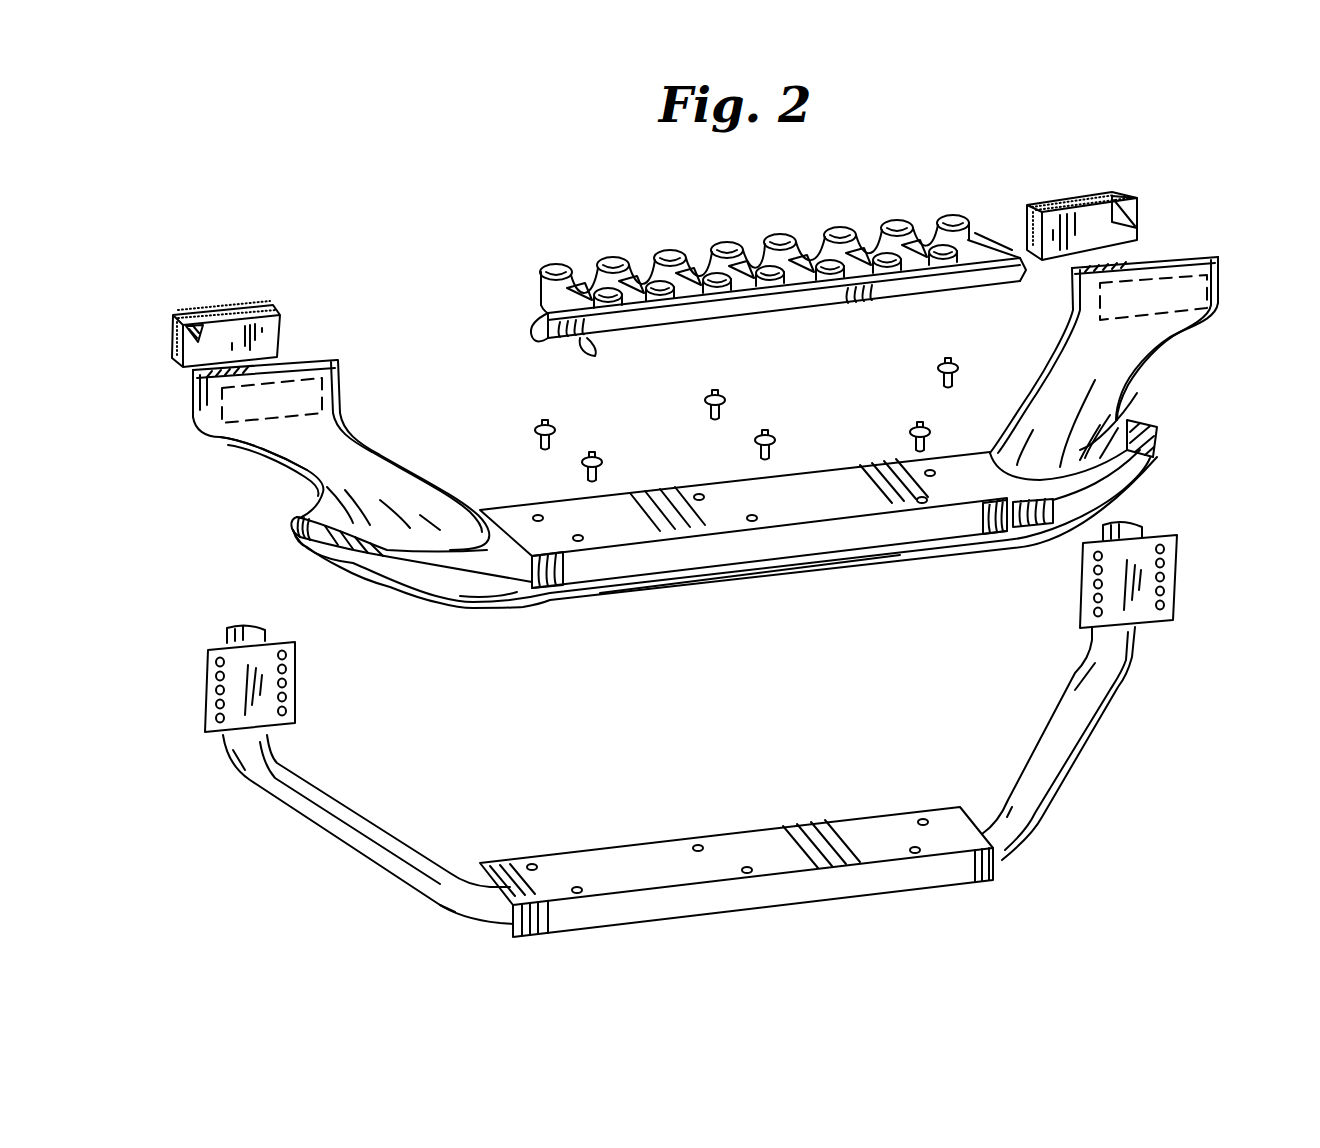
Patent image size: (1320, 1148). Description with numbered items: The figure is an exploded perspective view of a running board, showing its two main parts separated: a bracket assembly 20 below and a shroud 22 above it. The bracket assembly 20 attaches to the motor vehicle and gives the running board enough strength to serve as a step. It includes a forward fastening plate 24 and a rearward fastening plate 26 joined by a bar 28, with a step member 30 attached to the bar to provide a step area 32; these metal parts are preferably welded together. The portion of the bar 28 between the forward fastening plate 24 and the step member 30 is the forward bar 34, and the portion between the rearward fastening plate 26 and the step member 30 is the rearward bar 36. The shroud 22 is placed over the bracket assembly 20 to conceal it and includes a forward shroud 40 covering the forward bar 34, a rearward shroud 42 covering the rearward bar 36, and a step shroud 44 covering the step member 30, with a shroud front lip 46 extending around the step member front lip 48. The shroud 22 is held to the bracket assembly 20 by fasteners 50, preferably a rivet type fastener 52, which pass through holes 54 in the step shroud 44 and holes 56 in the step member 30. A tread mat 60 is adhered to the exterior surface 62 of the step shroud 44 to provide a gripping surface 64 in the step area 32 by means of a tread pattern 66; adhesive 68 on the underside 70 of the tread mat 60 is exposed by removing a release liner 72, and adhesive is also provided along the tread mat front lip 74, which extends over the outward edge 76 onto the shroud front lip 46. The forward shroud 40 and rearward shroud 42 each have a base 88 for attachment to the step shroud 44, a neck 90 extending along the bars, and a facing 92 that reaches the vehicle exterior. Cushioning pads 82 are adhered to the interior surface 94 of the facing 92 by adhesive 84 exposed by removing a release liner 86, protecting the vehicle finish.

The bracket assembly 20 is at (1153, 660).
The shroud 22 is at (1195, 352).
The forward fastening plate 24 is at (1177, 540).
The rearward fastening plate 26 is at (295, 643).
The bar 28 is at (1033, 827).
The step member 30 is at (795, 867).
The step area 32 is at (806, 468).
The forward bar 34 is at (1085, 708).
The rearward bar 36 is at (357, 827).
The forward shroud 40 is at (1137, 393).
The rearward shroud 42 is at (368, 480).
The step shroud 44 is at (652, 497).
The shroud front lip 46 is at (652, 578).
The step member front lip 48 is at (667, 905).
The fasteners 50 is at (950, 375).
The rivet type fastener 52 is at (603, 458).
The holes 54 is at (917, 499).
The holes 56 is at (742, 867).
The tread mat 60 is at (700, 262).
The exterior surface 62 is at (850, 507).
The gripping surface 64 is at (606, 285).
The tread pattern 66 is at (815, 215).
The adhesive 68 is at (553, 338).
The underside 70 is at (886, 303).
The release liner 72 is at (531, 318).
The tread mat front lip 74 is at (732, 303).
The outward edge 76 is at (970, 278).
The cushioning pads 82 is at (243, 305).
The adhesive 84 is at (192, 318).
The release liner 86 is at (278, 324).
The base 88 is at (417, 510).
The neck 90 is at (325, 468).
The facing 92 is at (235, 445).
The interior surface 94 is at (311, 360).